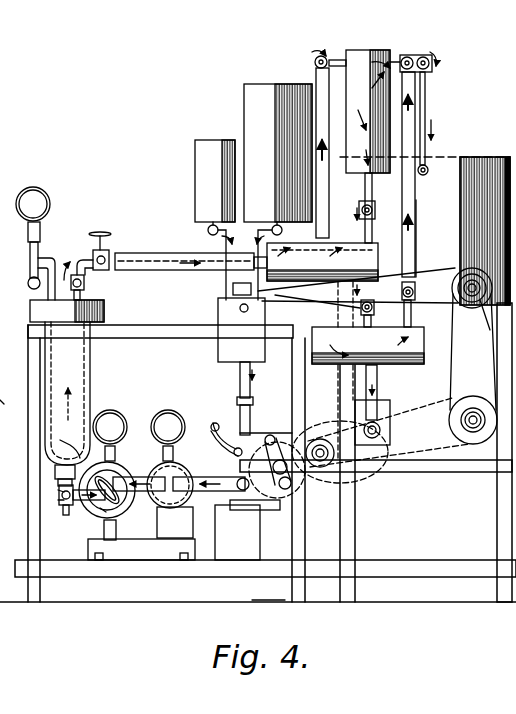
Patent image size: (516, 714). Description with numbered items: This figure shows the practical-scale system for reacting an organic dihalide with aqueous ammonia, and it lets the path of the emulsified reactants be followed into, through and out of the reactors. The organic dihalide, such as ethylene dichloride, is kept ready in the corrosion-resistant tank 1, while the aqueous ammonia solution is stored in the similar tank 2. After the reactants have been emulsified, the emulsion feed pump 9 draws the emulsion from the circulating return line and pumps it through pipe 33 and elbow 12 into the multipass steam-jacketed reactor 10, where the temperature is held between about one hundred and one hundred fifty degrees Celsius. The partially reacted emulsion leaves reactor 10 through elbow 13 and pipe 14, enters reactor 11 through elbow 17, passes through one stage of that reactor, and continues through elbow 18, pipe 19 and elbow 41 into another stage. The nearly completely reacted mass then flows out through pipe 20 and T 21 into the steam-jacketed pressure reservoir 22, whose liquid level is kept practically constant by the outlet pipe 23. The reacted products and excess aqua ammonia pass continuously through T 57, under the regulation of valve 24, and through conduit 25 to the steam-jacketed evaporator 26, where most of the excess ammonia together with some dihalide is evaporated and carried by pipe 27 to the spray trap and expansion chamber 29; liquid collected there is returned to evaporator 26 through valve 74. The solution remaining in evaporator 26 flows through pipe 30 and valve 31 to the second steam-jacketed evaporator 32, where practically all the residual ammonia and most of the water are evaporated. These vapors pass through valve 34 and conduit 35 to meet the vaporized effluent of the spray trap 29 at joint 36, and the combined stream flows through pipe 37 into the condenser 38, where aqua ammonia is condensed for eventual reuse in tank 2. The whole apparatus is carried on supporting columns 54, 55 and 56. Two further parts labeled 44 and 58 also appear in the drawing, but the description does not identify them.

The tank 1 is at (205, 170).
The tank 2 is at (278, 143).
The emulsion feed pump 9 is at (232, 456).
The reactor 10 is at (192, 492).
The reactor 11 is at (92, 504).
The elbow 12 is at (180, 470).
The elbow 13 is at (124, 470).
The pipe 14 is at (145, 492).
The elbow 17 is at (122, 470).
The elbow 18 is at (128, 525).
The pipe 19 is at (108, 540).
The pipe 20 is at (62, 500).
The T 21 is at (62, 492).
The pressure reservoir 22 is at (64, 404).
The outlet pipe 23 is at (92, 358).
The valve 24 is at (99, 232).
The conduit 25 is at (184, 250).
The evaporator 26 is at (322, 262).
The pipe 27 is at (316, 72).
The spray trap and expansion chamber 29 is at (368, 101).
The pipe 30 is at (376, 303).
The valve 31 is at (360, 310).
The evaporator 32 is at (368, 345).
The pipe 33 is at (242, 512).
The valve 34 is at (422, 304).
The conduit 35 is at (414, 254).
The joint 36 is at (410, 56).
The pipe 37 is at (425, 174).
The condenser 38 is at (467, 231).
The elbow 41 is at (65, 442).
The pipe 44 is at (14, 405).
The column 54 is at (268, 590).
The column 55 is at (352, 590).
The column 56 is at (497, 590).
The T 57 is at (86, 284).
The pipe 58 is at (103, 510).
The valve 74 is at (373, 209).